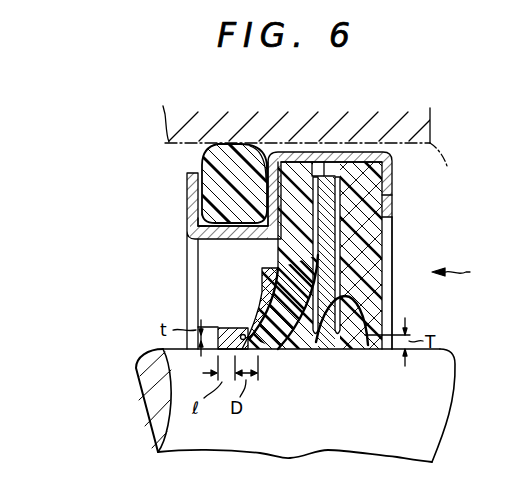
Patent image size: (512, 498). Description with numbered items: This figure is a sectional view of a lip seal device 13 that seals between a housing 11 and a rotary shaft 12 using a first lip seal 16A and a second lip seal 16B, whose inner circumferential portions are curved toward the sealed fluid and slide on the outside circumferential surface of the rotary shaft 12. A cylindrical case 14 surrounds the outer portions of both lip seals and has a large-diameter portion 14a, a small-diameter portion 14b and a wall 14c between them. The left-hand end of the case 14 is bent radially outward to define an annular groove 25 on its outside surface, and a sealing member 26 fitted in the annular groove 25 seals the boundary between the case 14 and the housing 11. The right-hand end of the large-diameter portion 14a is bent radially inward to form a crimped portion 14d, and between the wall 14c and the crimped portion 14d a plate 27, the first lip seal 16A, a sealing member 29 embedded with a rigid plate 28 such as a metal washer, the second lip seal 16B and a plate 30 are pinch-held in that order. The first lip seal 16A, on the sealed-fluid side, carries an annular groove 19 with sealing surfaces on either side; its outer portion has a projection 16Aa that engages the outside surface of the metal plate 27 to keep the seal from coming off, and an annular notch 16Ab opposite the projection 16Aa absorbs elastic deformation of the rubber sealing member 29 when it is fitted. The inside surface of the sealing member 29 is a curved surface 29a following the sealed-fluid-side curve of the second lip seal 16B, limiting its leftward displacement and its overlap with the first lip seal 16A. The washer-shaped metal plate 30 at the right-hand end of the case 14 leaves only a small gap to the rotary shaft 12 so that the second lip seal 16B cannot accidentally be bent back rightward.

The housing 11 is at (433, 150).
The rotary shaft 12 is at (445, 394).
The lip seal device 13 is at (500, 284).
The cylindrical case 14 is at (180, 195).
The large-diameter portion 14a is at (365, 149).
The small-diameter portion 14b is at (244, 242).
The wall 14c is at (254, 202).
The crimped portion 14d is at (393, 218).
The first lip seal 16A is at (283, 350).
The projection 16Aa is at (298, 165).
The annular notch 16Ab is at (321, 172).
The second lip seal 16B is at (352, 352).
The annular groove 19 is at (238, 326).
The annular groove 25 is at (200, 218).
The sealing member 26 is at (210, 162).
The plate 27 is at (270, 188).
The rigid plate 28 is at (330, 254).
The sealing member 29 is at (333, 284).
The curved surface 29a is at (321, 352).
The plate 30 is at (392, 195).